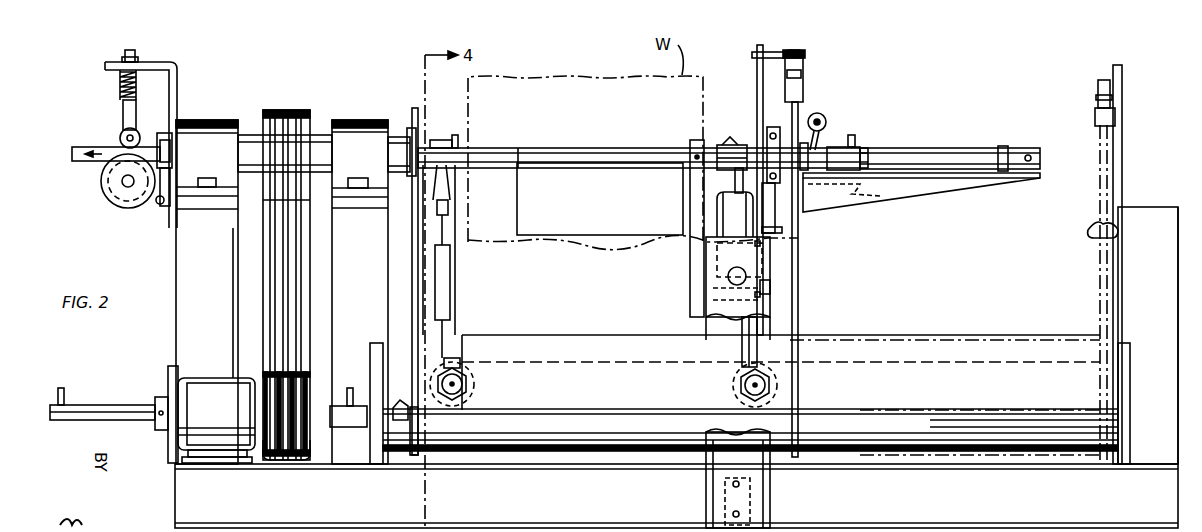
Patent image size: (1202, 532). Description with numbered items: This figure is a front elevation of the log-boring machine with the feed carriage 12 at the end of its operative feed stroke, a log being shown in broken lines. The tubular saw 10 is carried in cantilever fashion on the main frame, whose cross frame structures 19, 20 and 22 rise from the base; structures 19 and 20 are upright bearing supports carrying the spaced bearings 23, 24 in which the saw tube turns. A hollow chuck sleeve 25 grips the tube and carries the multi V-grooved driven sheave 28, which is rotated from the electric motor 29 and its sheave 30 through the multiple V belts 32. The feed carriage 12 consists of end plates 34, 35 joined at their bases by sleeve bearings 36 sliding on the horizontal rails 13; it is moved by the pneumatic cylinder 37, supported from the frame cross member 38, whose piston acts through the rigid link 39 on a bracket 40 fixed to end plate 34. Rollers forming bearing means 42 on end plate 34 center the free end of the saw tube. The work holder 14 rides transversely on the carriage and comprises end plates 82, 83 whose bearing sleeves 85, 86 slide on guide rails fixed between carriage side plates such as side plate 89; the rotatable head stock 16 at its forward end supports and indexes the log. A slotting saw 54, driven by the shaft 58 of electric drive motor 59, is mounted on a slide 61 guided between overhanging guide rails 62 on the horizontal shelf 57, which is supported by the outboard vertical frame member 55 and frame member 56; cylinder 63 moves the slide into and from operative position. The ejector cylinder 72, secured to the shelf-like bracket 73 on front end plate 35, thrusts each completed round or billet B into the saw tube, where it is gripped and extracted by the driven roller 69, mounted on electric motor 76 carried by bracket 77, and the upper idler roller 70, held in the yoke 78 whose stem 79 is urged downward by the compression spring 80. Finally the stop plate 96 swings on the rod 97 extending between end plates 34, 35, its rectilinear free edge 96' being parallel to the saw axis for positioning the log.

The tubular saw 10 is at (514, 148).
The feed carriage 12 is at (538, 430).
The rails 13 is at (970, 424).
The work holder 14 is at (460, 319).
The head stock 16 is at (738, 144).
The cross frame structure 19 is at (176, 261).
The cross frame structure 20 is at (366, 261).
The cross frame structure 22 is at (1158, 307).
The bearing 23 is at (209, 120).
The bearing 24 is at (356, 120).
The chuck sleeve 25 is at (320, 138).
The driven sheave 28 is at (265, 108).
The electric motor 29 is at (212, 392).
The sheave 30 is at (310, 450).
The multiple V belts 32 is at (263, 318).
The carriage end plate 34 is at (415, 108).
The carriage end plate 35 is at (796, 272).
The sleeve bearings 36 is at (585, 442).
The cylinder 37 is at (120, 410).
The frame cross member 38 is at (168, 366).
The rigid link 39 is at (366, 386).
The bracket 40 is at (401, 410).
The bearing means 42 is at (408, 126).
The slotting saw 54 is at (726, 140).
The outboard vertical frame member 55 is at (706, 318).
The frame member 56 is at (742, 330).
The horizontal shelf 57 is at (800, 317).
The shaft 58 is at (735, 182).
The electric drive motor 59 is at (730, 222).
The slide 61 is at (772, 290).
The guide rails 62 is at (706, 291).
The cylinder 63 is at (726, 273).
The driven roller 69 is at (110, 198).
The upper roller 70 is at (122, 134).
The cylinder 72 is at (938, 150).
The shelf-like bracket 73 is at (938, 180).
The electric motor 76 is at (128, 208).
The bracket 77 is at (178, 74).
The yoke 78 is at (124, 115).
The stem 79 is at (130, 50).
The compression spring 80 is at (119, 81).
The end plate 82 is at (456, 285).
The end plate 83 is at (757, 80).
The bearing sleeve 85 is at (460, 378).
The bearing sleeve 86 is at (770, 366).
The carriage side plate 89 is at (600, 399).
The stop plate 96 is at (600, 199).
The rectilinear free edge 96' is at (623, 261).
The rod 97 is at (488, 148).
The round or billet B is at (80, 164).